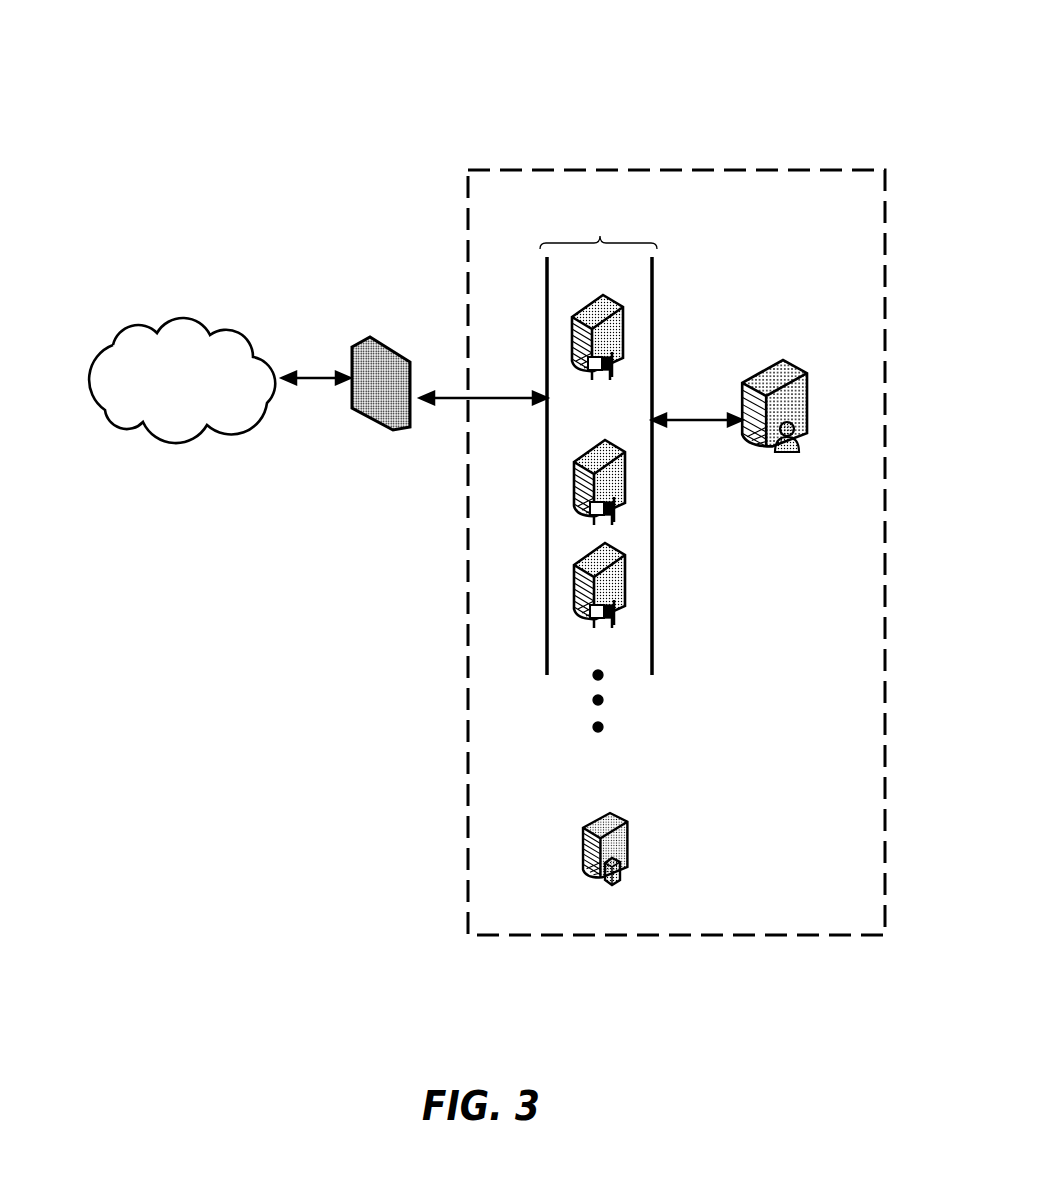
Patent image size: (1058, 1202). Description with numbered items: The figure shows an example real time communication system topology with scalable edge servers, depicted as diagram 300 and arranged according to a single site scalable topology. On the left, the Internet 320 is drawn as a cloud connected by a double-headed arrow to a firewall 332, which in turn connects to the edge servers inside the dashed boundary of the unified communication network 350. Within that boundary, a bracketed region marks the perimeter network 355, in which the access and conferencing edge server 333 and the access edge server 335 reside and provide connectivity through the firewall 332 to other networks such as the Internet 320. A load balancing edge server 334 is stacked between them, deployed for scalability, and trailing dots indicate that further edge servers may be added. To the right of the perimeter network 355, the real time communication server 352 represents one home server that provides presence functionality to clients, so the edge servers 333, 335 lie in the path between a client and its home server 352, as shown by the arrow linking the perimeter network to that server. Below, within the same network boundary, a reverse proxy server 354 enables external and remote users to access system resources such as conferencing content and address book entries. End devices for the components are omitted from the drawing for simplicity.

The diagram 300 is at (775, 47).
The Internet 320 is at (159, 304).
The firewall 332 is at (374, 326).
The access and conferencing edge server 333 is at (564, 304).
The load balancing edge server 334 is at (568, 440).
The access edge server 335 is at (568, 545).
The unified communication network 350 is at (602, 152).
The real time communication server 352 is at (774, 345).
The reverse proxy server 354 is at (586, 803).
The perimeter network 355 is at (619, 222).